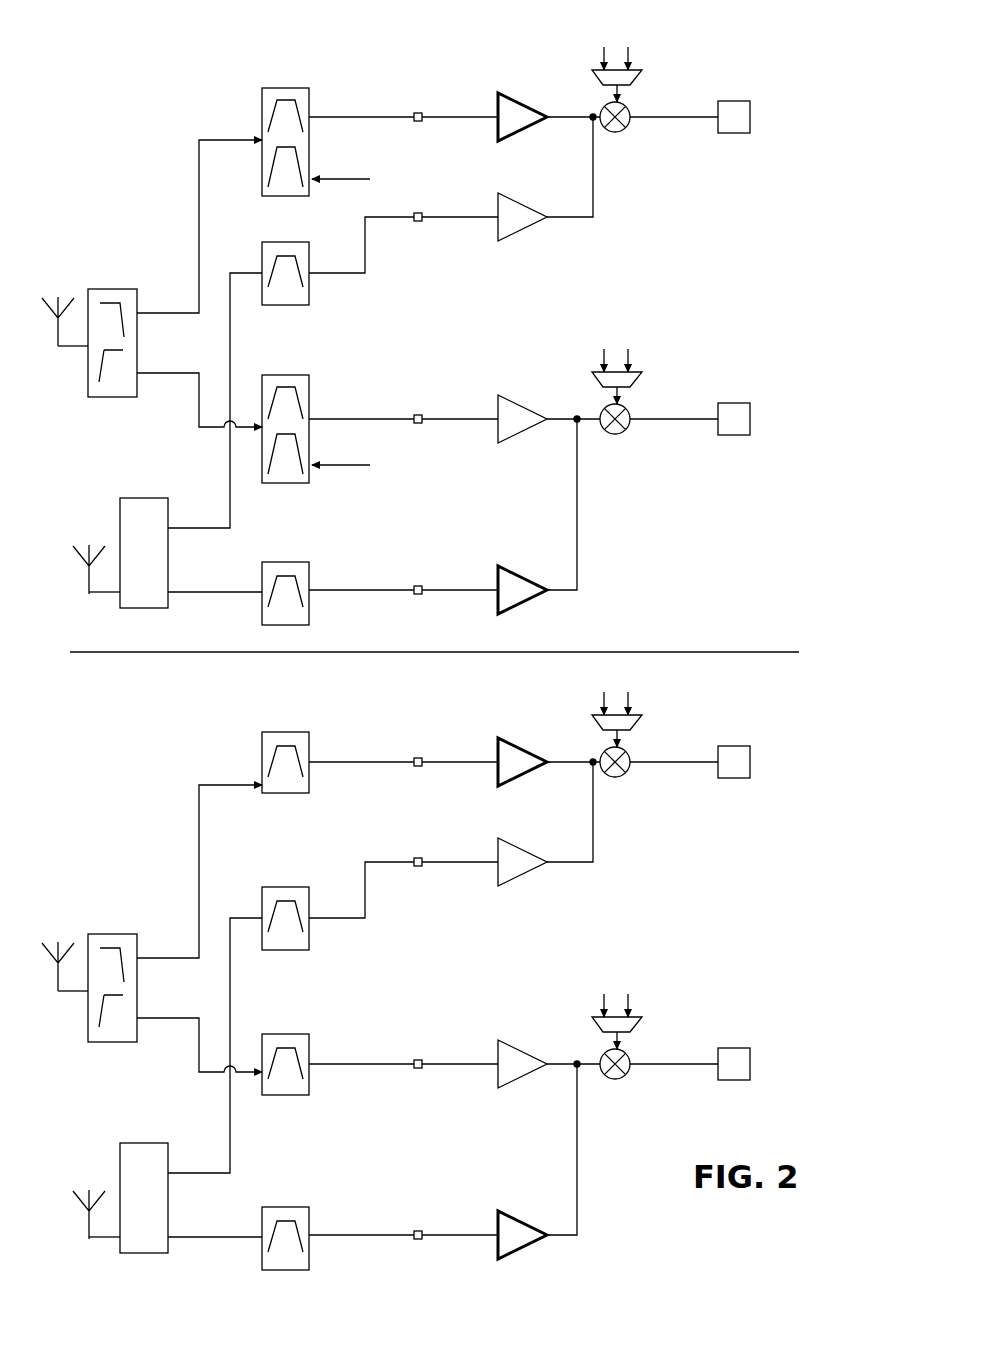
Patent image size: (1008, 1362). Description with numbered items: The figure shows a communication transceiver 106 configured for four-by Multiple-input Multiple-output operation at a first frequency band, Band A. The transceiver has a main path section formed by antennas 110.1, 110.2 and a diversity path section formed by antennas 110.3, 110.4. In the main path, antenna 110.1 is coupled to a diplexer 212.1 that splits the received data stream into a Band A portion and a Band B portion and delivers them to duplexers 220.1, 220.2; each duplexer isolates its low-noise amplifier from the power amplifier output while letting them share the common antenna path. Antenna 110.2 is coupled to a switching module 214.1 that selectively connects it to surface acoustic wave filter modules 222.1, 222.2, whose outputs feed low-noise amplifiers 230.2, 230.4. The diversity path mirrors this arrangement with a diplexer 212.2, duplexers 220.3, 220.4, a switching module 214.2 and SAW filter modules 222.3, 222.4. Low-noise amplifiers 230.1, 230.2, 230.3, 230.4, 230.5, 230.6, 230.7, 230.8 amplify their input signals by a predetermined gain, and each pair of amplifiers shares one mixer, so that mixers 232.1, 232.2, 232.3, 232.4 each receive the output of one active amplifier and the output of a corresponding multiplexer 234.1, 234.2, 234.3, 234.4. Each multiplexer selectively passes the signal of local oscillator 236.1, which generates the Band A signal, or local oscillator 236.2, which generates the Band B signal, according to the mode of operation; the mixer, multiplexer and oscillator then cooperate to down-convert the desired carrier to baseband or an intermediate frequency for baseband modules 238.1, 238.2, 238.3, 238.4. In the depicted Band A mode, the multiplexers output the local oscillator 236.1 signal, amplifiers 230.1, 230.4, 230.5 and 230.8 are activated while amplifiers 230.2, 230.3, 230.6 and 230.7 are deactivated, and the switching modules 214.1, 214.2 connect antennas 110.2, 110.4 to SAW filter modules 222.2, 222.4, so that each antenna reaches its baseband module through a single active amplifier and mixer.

The communication transceiver 106 is at (100, 106).
The antenna 110.1 is at (42, 333).
The antenna 110.2 is at (78, 579).
The antenna 110.3 is at (77, 993).
The antenna 110.4 is at (107, 1200).
The diplexer 212.1 is at (137, 289).
The diplexer 212.2 is at (127, 957).
The switching module 214.1 is at (168, 510).
The switching module 214.2 is at (159, 1172).
The duplexer 220.1 is at (309, 101).
The duplexer 220.2 is at (309, 388).
The duplexer 220.3 is at (320, 741).
The duplexer 220.4 is at (320, 1044).
The surface acoustic wave (SAW) filter module 222.1 is at (309, 293).
The surface acoustic wave (SAW) filter module 222.2 is at (309, 613).
The surface acoustic wave (SAW) filter module 222.3 is at (313, 908).
The surface acoustic wave (SAW) filter module 222.4 is at (313, 1227).
The low-noise amplifier 230.1 is at (498, 101).
The low-noise amplifier 230.2 is at (498, 201).
The low-noise amplifier 230.3 is at (498, 403).
The low-noise amplifier 230.4 is at (498, 574).
The low-noise amplifier 230.5 is at (502, 757).
The low-noise amplifier 230.6 is at (505, 857).
The low-noise amplifier 230.7 is at (502, 1059).
The low-noise amplifier 230.8 is at (505, 1230).
The mixer 232.1 is at (625, 128).
The mixer 232.2 is at (625, 430).
The mixer 232.3 is at (654, 774).
The mixer 232.4 is at (654, 1076).
The multiplexer 234.1 is at (633, 84).
The multiplexer 234.2 is at (633, 386).
The multiplexer 234.3 is at (650, 724).
The multiplexer 234.4 is at (650, 1026).
The local oscillator 236.1 is at (565, 38).
The local oscillator 236.2 is at (664, 37).
The baseband module 238.1 is at (745, 133).
The baseband module 238.2 is at (745, 435).
The baseband module 238.3 is at (771, 775).
The baseband module 238.4 is at (771, 1077).